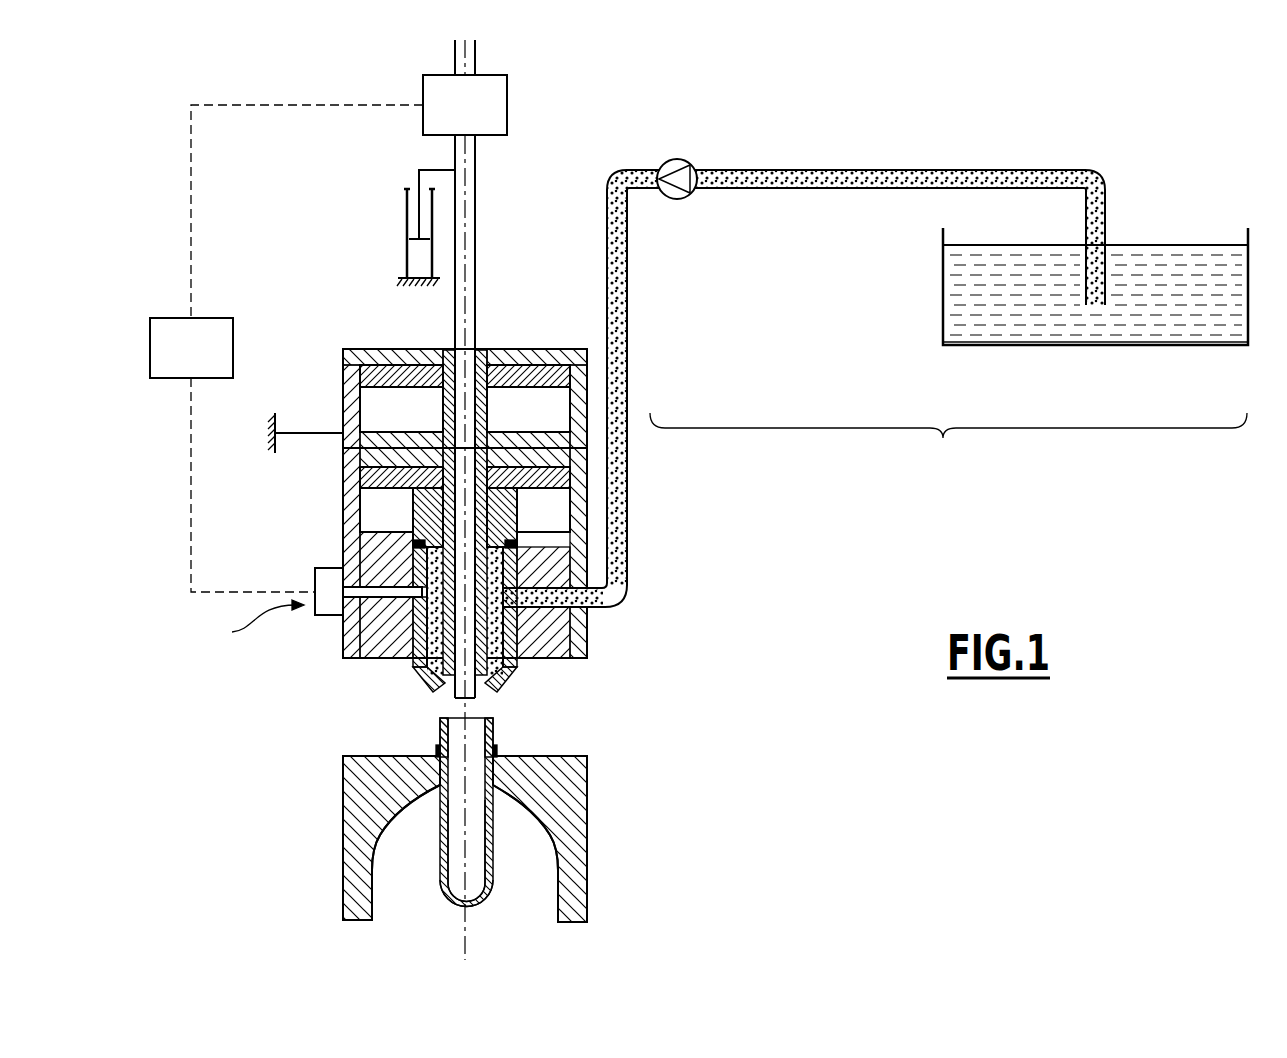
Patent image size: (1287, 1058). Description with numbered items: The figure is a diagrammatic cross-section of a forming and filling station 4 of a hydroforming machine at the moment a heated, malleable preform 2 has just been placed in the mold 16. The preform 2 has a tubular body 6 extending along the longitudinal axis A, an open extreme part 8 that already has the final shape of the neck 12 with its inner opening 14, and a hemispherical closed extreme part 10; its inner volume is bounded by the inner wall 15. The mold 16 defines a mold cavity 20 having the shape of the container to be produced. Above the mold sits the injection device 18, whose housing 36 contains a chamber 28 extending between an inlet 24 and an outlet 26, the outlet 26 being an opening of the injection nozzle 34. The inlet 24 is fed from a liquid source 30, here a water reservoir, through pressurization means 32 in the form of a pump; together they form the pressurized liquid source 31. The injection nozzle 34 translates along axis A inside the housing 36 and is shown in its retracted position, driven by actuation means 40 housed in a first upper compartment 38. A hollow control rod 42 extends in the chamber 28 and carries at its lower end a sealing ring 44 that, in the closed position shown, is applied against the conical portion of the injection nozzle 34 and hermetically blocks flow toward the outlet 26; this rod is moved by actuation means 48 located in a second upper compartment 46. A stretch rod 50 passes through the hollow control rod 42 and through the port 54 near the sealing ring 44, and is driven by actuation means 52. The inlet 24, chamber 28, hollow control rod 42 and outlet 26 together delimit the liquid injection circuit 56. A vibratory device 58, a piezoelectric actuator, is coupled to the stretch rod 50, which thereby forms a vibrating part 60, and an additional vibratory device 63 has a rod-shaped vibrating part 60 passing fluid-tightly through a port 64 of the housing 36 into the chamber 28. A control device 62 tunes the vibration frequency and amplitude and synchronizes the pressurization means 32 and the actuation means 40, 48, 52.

The preform 2 is at (440, 830).
The forming and filling station 4 is at (257, 623).
The body 6 is at (497, 806).
The open extreme part 8 is at (490, 720).
The closed extreme part 10 is at (463, 907).
The neck 12 is at (495, 735).
The inner opening 14 is at (432, 733).
The inner wall 15 is at (447, 862).
The mold 16 is at (575, 870).
The injection device 18 is at (468, 571).
The mold cavity 20 is at (400, 888).
The inlet 24 is at (573, 600).
The outlet 26 is at (450, 633).
The chamber 28 is at (497, 632).
The liquid source 30 is at (1185, 325).
The pressurized liquid source 31 is at (948, 443).
The pressurization means 32 is at (672, 160).
The injection nozzle 34 is at (405, 653).
The housing 36 is at (547, 550).
The first upper compartment 38 is at (360, 508).
The actuation means 40 is at (547, 505).
The hollow control rod 42 is at (483, 565).
The sealing ring 44 is at (493, 682).
The second upper compartment 46 is at (343, 392).
The actuation means 48 is at (360, 349).
The stretch rod 50 is at (469, 173).
The actuation means 52 is at (418, 257).
The port 54 is at (455, 700).
The liquid injection circuit 56 is at (413, 560).
The vibratory device 58 is at (435, 90).
The vibrating part 60 is at (470, 272).
The control device 62 is at (150, 345).
The additional vibratory device 63 is at (315, 578).
The port 64 is at (408, 638).
The axis A is at (467, 223).